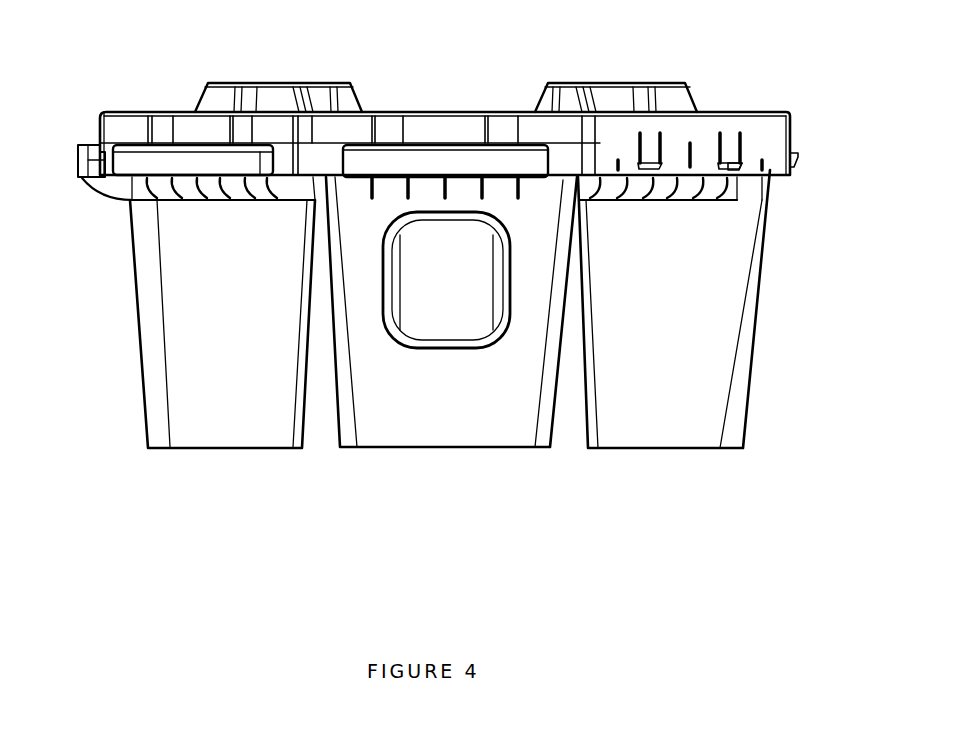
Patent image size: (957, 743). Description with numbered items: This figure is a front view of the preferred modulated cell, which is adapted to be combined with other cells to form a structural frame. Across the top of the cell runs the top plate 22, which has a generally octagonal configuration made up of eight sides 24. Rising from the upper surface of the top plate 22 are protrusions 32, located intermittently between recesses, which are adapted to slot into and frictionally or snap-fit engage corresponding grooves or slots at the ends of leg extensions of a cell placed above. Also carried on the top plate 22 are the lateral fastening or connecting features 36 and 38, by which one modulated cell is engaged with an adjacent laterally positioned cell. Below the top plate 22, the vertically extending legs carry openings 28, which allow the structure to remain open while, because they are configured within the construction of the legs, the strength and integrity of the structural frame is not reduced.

The top plate 22 is at (778, 140).
The sides 24 is at (132, 405).
The openings 28 is at (435, 315).
The protrusions 32 is at (203, 90).
The lateral fastening feature 36 is at (78, 165).
The lateral connecting feature 38 is at (735, 170).